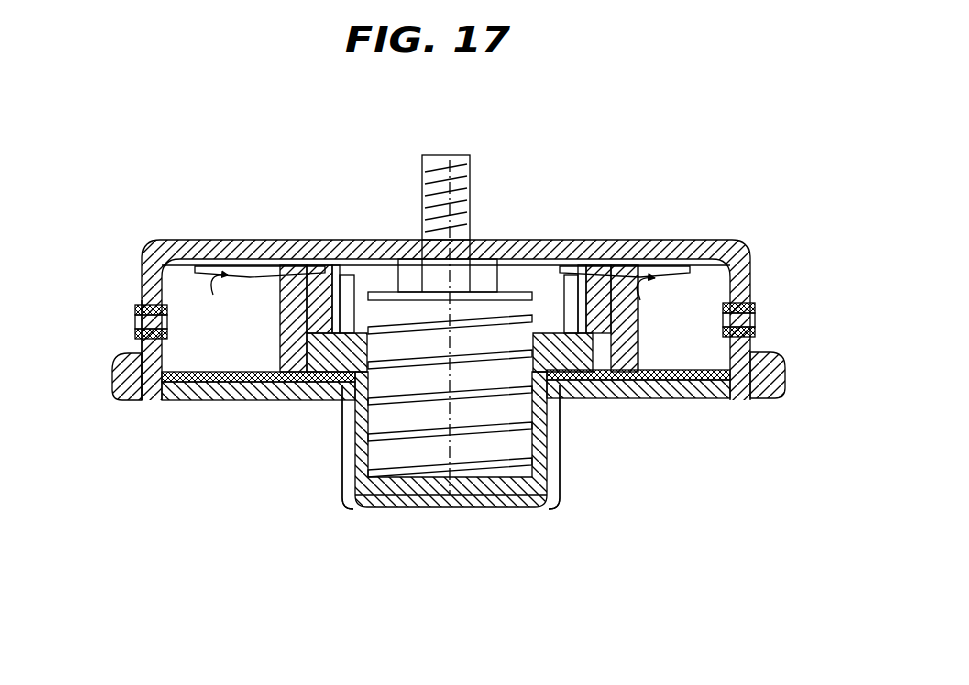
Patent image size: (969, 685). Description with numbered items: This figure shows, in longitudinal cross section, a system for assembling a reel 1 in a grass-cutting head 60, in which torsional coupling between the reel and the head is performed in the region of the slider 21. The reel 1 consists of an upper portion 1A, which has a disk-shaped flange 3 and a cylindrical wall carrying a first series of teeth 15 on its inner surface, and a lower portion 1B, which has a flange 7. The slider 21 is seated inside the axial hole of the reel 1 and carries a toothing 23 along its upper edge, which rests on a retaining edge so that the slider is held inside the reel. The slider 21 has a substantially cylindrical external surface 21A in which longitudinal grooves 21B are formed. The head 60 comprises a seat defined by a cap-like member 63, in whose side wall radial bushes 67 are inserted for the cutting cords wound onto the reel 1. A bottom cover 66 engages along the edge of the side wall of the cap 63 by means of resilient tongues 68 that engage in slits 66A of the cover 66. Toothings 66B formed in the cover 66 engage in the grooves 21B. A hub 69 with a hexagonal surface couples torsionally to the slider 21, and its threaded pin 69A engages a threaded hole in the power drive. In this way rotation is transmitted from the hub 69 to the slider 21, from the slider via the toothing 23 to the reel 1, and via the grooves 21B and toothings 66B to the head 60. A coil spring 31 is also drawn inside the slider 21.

The reel 1 is at (690, 296).
The upper portion of the reel 1A is at (655, 240).
The lower portion of the reel 1B is at (690, 366).
The disk-shaped flange 3 is at (238, 268).
The flange 7 is at (218, 372).
The first series of teeth 15 is at (355, 264).
The slider 21 is at (343, 509).
The cylindrical external surface 21A is at (618, 543).
The axial grooves 21B is at (345, 478).
The toothing 23 is at (272, 402).
The coil spring 31 is at (355, 476).
The head 60 is at (757, 255).
The cap-like member 63 is at (142, 290).
The bottom cover 66 is at (667, 400).
The slits 66A is at (758, 400).
The toothings 66B is at (342, 420).
The radial bushes 67 is at (135, 325).
The resilient tongues 68 is at (138, 402).
The hub 69 is at (418, 268).
The threaded pin 69A is at (468, 162).